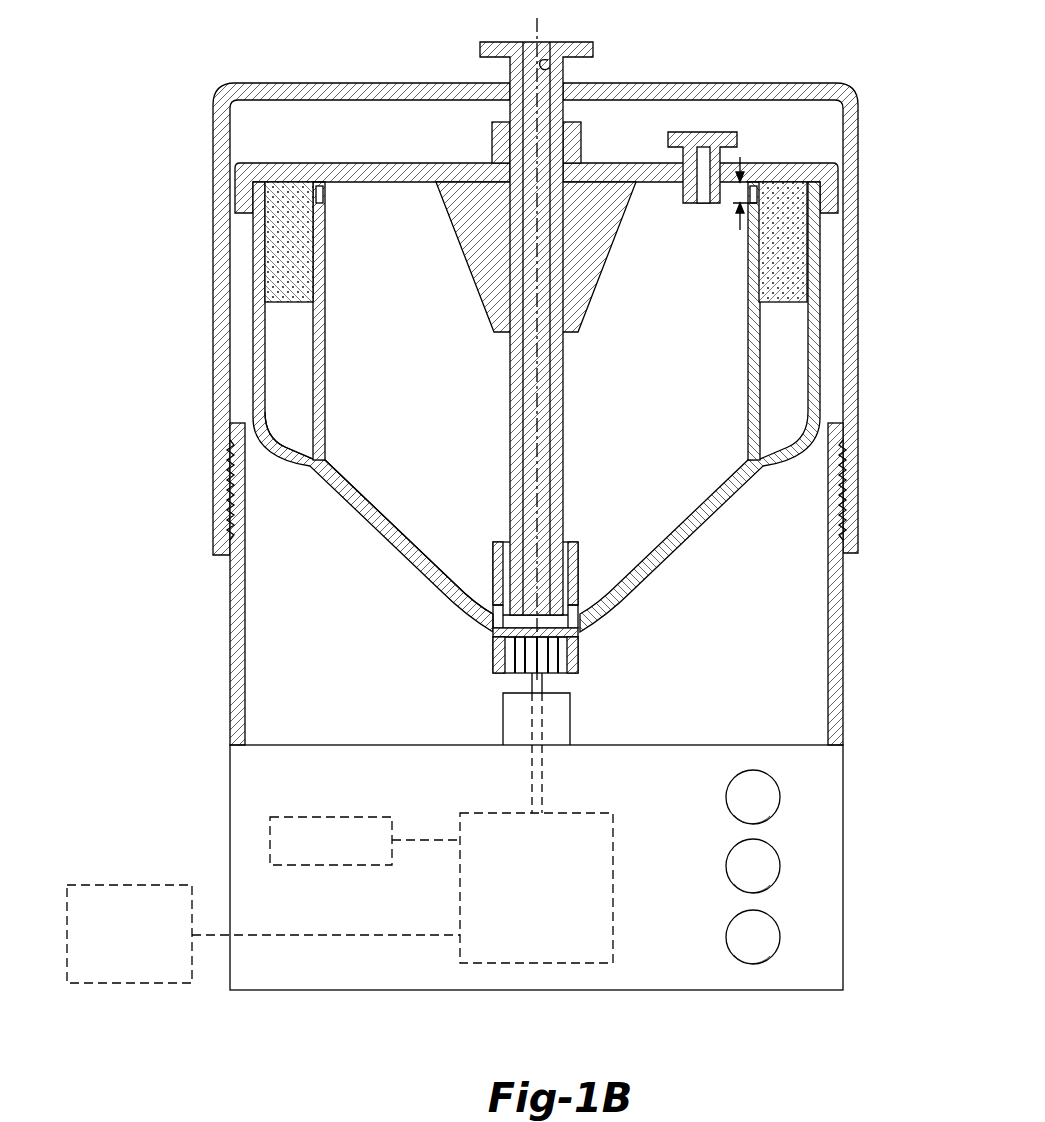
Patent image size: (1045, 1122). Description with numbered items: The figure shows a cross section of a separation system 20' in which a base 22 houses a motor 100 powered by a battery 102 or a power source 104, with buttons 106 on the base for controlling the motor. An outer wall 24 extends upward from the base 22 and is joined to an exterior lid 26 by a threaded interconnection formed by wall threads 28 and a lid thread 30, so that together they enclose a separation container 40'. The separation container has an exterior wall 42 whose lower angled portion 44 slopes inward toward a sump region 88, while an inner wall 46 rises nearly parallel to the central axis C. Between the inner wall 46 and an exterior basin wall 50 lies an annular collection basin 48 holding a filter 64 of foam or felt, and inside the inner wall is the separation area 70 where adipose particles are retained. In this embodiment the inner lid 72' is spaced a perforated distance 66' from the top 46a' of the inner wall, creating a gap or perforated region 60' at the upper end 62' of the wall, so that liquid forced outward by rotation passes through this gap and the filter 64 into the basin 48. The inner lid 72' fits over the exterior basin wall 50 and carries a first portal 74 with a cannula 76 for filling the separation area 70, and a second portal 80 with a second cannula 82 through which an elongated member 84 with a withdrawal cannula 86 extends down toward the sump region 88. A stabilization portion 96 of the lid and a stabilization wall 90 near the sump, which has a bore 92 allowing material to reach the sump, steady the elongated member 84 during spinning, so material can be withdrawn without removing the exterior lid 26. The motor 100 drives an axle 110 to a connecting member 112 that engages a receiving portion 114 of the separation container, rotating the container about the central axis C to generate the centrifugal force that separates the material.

The separation system 20' is at (332, 24).
The base 22 is at (835, 812).
The outer wall 24 is at (843, 662).
The exterior lid 26 is at (858, 325).
The wall threads 28 is at (847, 537).
The lid thread 30 is at (841, 510).
The separation container 40' is at (700, 407).
The exterior wall 42 is at (404, 566).
The lower angled portion 44 is at (440, 588).
The inner wall 46 is at (325, 420).
The top of the inner wall 46a' is at (339, 153).
The annular collection basin 48 is at (305, 392).
The exterior basin wall 50 is at (253, 353).
The gap or perforated region 60' is at (586, 185).
The upper end of the inner wall 62' is at (363, 201).
The filter 64 is at (270, 258).
The perforated distance 66' is at (797, 136).
The separation area 70 is at (657, 428).
The inner lid 72' is at (536, 164).
The first portal 74 is at (683, 128).
The cannula 76 is at (699, 145).
The second portal 80 is at (492, 145).
The second cannula 82 is at (565, 153).
The elongated member 84 is at (480, 45).
The withdrawal cannula 86 is at (550, 68).
The sump region 88 is at (568, 618).
The stabilization wall 90 is at (579, 565).
The bore 92 is at (493, 616).
The stabilization portion 96 is at (597, 262).
The motor 100 is at (613, 883).
The battery 102 is at (340, 817).
The power source 104 is at (121, 884).
The buttons 106 is at (768, 934).
The axle 110 is at (545, 783).
The connecting member 112 is at (560, 665).
The receiving portion 114 is at (493, 657).
The central axis C is at (545, 30).